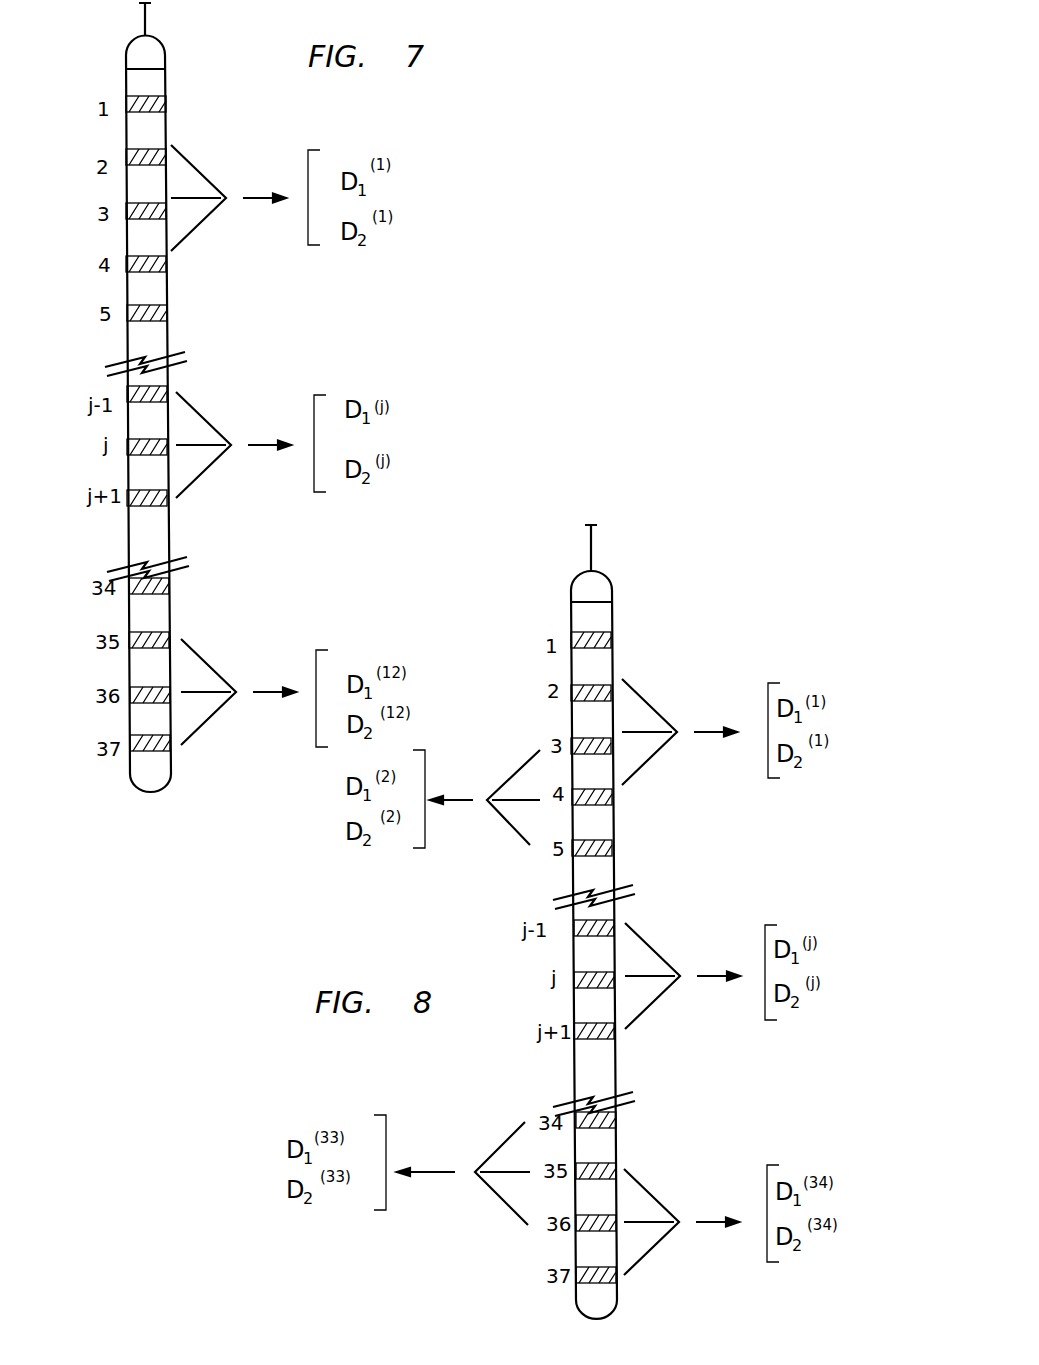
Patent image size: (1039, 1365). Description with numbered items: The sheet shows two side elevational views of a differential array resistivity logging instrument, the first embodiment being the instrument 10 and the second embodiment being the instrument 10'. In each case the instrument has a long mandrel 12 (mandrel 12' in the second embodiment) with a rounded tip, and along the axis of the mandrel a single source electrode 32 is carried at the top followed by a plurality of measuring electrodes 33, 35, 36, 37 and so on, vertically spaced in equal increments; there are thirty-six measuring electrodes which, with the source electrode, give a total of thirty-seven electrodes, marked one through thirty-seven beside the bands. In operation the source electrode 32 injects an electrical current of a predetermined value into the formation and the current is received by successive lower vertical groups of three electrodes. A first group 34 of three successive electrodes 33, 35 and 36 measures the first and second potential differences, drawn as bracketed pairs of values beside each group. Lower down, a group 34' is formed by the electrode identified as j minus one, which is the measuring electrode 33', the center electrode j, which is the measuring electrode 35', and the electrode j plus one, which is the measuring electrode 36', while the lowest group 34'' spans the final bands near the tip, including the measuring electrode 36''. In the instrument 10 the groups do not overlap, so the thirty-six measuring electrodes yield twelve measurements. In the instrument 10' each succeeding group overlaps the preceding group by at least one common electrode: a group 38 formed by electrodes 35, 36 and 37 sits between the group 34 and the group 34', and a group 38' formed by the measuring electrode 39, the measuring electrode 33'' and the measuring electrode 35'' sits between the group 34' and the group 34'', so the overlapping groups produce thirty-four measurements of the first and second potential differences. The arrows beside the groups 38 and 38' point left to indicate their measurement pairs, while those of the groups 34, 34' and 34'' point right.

In FIG. 7, the differential array instrument 10 is at (182, 397).
In FIG. 8, the differential array instrument 10' is at (641, 922).
In FIG. 7, the mandrel 12 is at (161, 49).
In FIG. 8, the mandrel 12' is at (612, 594).
In FIG. 7, the source electrode 32 is at (126, 100).
In FIG. 8, the source electrode 32 is at (571, 634).
In FIG. 7, the measuring electrode 33 is at (104, 154).
In FIG. 8, the measuring electrode 33 is at (555, 685).
In FIG. 7, the measuring electrode 35 is at (101, 211).
In FIG. 8, the measuring electrode 35 is at (558, 733).
In FIG. 7, the measuring electrode 36 is at (105, 262).
In FIG. 8, the measuring electrode 36 is at (572, 782).
In FIG. 7, the measuring electrode 37 is at (127, 308).
In FIG. 8, the measuring electrode 37 is at (582, 842).
In FIG. 7, the electrode group 34 is at (228, 185).
In FIG. 8, the electrode group 34 is at (679, 726).
In FIG. 7, the electrode group 34' is at (233, 432).
In FIG. 8, the electrode group 34' is at (603, 968).
In FIG. 7, the electrode group 34'' is at (238, 687).
In FIG. 8, the electrode group 34'' is at (681, 1217).
In FIG. 7, the measuring electrode j-1 33' is at (101, 400).
In FIG. 8, the measuring electrode j-1 33' is at (540, 922).
In FIG. 7, the measuring electrode j 35' is at (95, 448).
In FIG. 8, the measuring electrode j 35' is at (540, 1034).
In FIG. 7, the measuring electrode j+1 36' is at (99, 491).
In FIG. 7, the measuring electrode 33'' is at (99, 641).
In FIG. 8, the measuring electrode 33'' is at (632, 1156).
In FIG. 7, the measuring electrode 35'' is at (95, 698).
In FIG. 8, the measuring electrode 35'' is at (564, 1210).
In FIG. 7, the measuring electrode 36'' is at (97, 748).
In FIG. 8, the measuring electrode 36'' is at (564, 1267).
In FIG. 8, the electrode group 38 is at (485, 797).
In FIG. 8, the electrode group 38' is at (463, 1166).
In FIG. 8, the measuring electrode 39 is at (617, 1118).